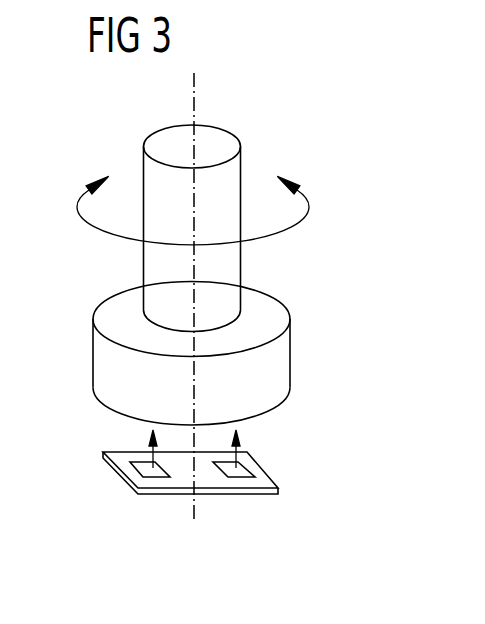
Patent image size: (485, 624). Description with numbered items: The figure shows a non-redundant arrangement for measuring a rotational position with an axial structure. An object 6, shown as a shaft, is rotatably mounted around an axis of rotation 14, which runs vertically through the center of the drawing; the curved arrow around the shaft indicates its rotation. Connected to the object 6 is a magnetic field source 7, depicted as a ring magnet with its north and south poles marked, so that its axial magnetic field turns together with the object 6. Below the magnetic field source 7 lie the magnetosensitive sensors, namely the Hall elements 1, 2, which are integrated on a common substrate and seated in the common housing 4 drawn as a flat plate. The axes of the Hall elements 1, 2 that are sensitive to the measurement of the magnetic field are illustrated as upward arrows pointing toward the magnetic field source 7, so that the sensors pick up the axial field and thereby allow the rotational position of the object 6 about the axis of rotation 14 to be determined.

The Hall element 1 is at (160, 490).
The Hall element 2 is at (240, 490).
The common housing 4 is at (265, 465).
The object 6 is at (230, 265).
The magnetic field source 7 is at (280, 370).
The axis of rotation 14 is at (195, 88).